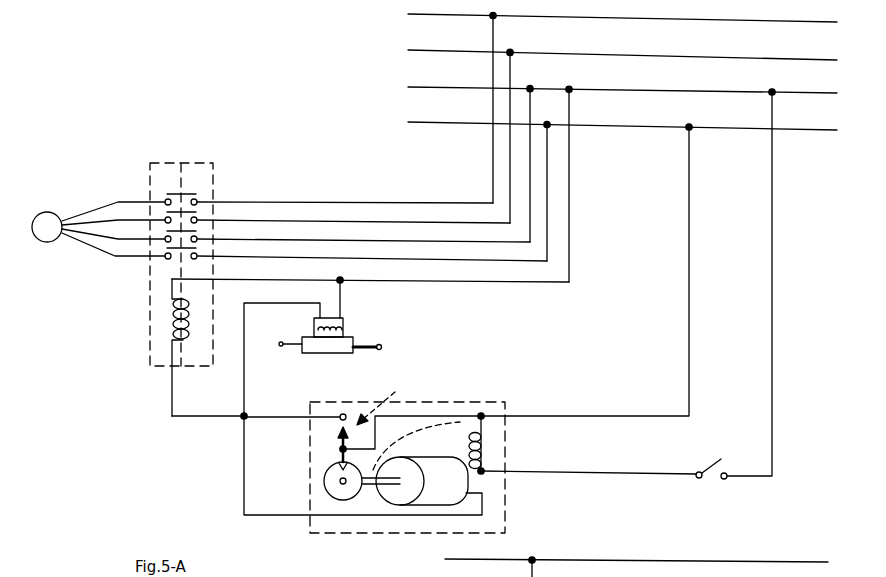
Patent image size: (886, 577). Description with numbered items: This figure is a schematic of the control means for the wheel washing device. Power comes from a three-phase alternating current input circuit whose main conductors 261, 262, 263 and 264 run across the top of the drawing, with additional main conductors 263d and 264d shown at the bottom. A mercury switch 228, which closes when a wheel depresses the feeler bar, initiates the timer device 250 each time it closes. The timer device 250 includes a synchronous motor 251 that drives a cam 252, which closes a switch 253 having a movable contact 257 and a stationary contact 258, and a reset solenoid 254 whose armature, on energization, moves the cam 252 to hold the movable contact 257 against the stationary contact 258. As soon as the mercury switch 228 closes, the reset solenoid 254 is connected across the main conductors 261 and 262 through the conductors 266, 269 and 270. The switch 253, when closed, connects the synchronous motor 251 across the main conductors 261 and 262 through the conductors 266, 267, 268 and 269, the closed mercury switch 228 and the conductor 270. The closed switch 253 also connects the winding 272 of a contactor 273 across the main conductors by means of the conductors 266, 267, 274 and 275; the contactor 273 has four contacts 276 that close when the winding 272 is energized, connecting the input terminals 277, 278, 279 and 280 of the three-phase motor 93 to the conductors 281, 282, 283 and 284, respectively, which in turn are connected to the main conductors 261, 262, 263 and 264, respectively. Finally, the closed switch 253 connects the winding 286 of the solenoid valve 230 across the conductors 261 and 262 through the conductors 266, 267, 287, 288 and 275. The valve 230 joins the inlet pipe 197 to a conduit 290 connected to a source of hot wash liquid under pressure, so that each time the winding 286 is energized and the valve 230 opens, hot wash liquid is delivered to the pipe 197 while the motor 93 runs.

The motor 93 is at (44, 258).
The supply pipe 197 is at (378, 345).
The mercury switch 228 is at (708, 466).
The valve 230 is at (335, 355).
The timer device 250 is at (395, 535).
The synchronous motor 251 is at (452, 460).
The cam 252 is at (325, 482).
The switch 253 is at (392, 401).
The reset solenoid 254 is at (495, 446).
The movable contact 257 is at (340, 437).
The stationary contact 258 is at (346, 411).
The main conductor 261 is at (621, 130).
The main conductor 262 is at (614, 92).
The main conductor 263 is at (613, 58).
The main conductor 264 is at (612, 26).
The supply line 263d is at (641, 569).
The supply line 264d is at (661, 556).
The conductor 266 is at (640, 418).
The conductor 267 is at (282, 396).
The conductor 268 is at (272, 525).
The conductor 269 is at (636, 472).
The conductor 270 is at (772, 410).
The winding 272 is at (193, 308).
The contactor 273 is at (150, 335).
The conductor 274 is at (174, 402).
The conductor 275 is at (452, 290).
The contacts 276 is at (197, 204).
The motor input terminal 277 is at (103, 250).
The motor input terminal 278 is at (112, 252).
The motor input terminal 279 is at (142, 194).
The motor input terminal 280 is at (99, 207).
The conductor 281 is at (412, 260).
The conductor 282 is at (410, 240).
The conductor 283 is at (410, 220).
The conductor 284 is at (399, 198).
The winding 286 is at (343, 327).
The conductor 287 is at (248, 386).
The conductor 288 is at (345, 296).
The conduit 290 is at (289, 340).